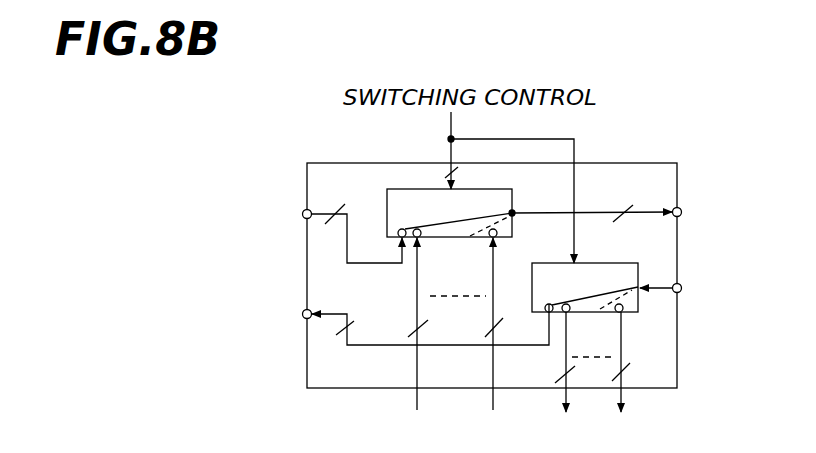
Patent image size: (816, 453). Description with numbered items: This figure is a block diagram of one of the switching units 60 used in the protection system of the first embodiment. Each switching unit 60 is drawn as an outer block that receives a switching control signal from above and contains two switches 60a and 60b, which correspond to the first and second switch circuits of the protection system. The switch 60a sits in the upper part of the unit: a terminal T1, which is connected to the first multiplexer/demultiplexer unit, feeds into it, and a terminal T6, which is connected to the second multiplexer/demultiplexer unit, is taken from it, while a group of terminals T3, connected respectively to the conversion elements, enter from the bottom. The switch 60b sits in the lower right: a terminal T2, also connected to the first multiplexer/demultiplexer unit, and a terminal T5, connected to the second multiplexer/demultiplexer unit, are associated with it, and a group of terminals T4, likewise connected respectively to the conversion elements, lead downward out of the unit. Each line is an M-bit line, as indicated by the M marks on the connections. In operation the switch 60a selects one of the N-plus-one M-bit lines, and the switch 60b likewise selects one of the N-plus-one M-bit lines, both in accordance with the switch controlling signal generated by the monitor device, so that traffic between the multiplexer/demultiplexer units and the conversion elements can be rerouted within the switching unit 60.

The switching unit 60 is at (637, 163).
The switch 60a is at (474, 207).
The switch 60b is at (590, 252).
The terminal T1 is at (332, 225).
The terminal T2 is at (406, 319).
The terminals T3 is at (500, 418).
The terminals T4 is at (628, 418).
The terminal T5 is at (679, 289).
The terminal T6 is at (614, 204).